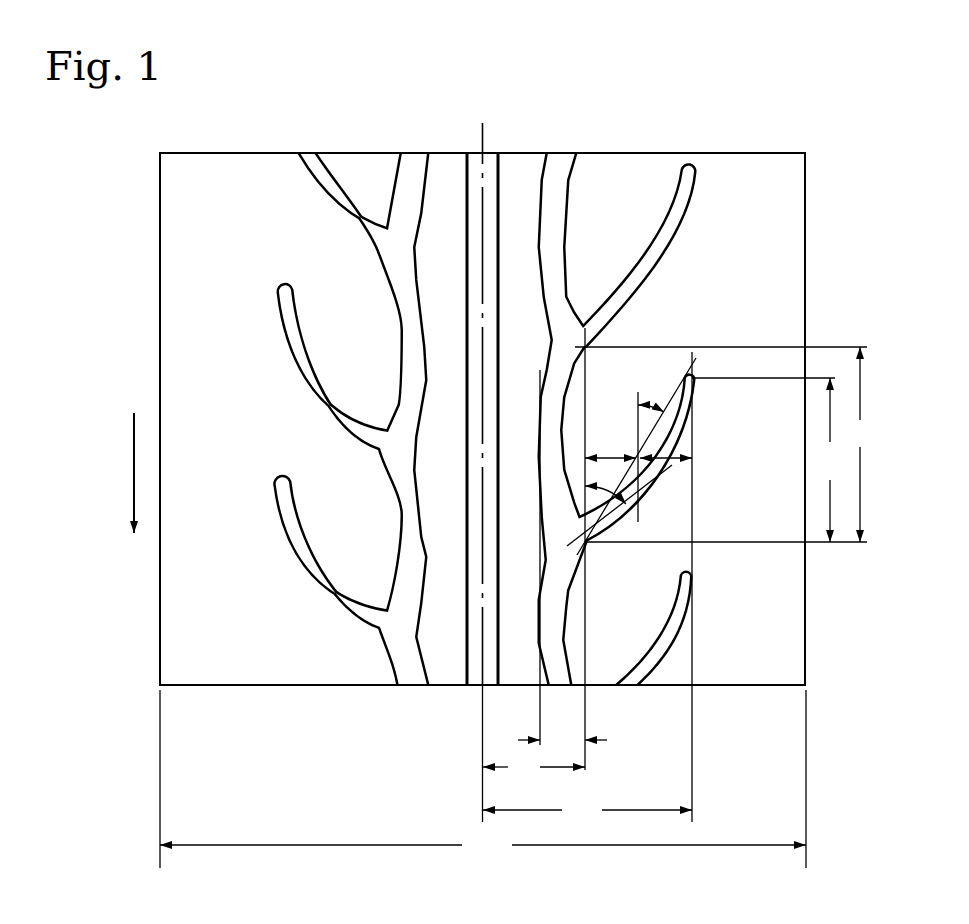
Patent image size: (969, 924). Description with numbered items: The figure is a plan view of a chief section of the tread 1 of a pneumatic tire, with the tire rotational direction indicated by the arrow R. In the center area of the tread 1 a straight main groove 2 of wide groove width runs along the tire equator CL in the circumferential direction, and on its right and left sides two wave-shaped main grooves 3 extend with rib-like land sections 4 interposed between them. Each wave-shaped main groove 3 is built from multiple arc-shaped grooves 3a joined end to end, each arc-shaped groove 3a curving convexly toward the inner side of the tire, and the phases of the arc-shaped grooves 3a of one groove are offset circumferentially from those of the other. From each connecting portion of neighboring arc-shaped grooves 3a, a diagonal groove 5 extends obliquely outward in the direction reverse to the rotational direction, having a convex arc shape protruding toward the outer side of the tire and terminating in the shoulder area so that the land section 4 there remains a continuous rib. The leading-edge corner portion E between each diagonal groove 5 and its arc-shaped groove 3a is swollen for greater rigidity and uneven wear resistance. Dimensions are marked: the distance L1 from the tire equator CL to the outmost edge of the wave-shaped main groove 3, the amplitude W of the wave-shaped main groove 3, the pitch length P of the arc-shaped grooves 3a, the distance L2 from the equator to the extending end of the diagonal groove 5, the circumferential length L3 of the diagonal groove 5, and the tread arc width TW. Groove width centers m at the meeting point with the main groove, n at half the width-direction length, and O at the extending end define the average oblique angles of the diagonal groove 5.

The tread 1 is at (808, 204).
The straight main groove 2 is at (490, 157).
The wave-shaped main groove 3 is at (412, 168).
The arc-shaped groove 3a is at (403, 290).
The land section 4 is at (447, 172).
The diagonal groove 5 is at (302, 358).
The tire equator CL is at (478, 395).
The leading-edge corner portion E is at (387, 430).
The groove width center at extending end O is at (687, 377).
The groove width center at meeting point m is at (591, 548).
The groove width center at half length n is at (642, 492).
The amplitude of wave-shaped main groove W is at (562, 729).
The distance from tire equator to outmost edge of wave-shaped main groove L1 is at (534, 769).
The distance from tire equator to extending end of diagonal groove L2 is at (587, 812).
The length of diagonal groove in tire circumferential direction L3 is at (827, 460).
The pitch length P is at (859, 444).
The tread arc width TW is at (483, 845).
The tire rotational direction R is at (133, 490).